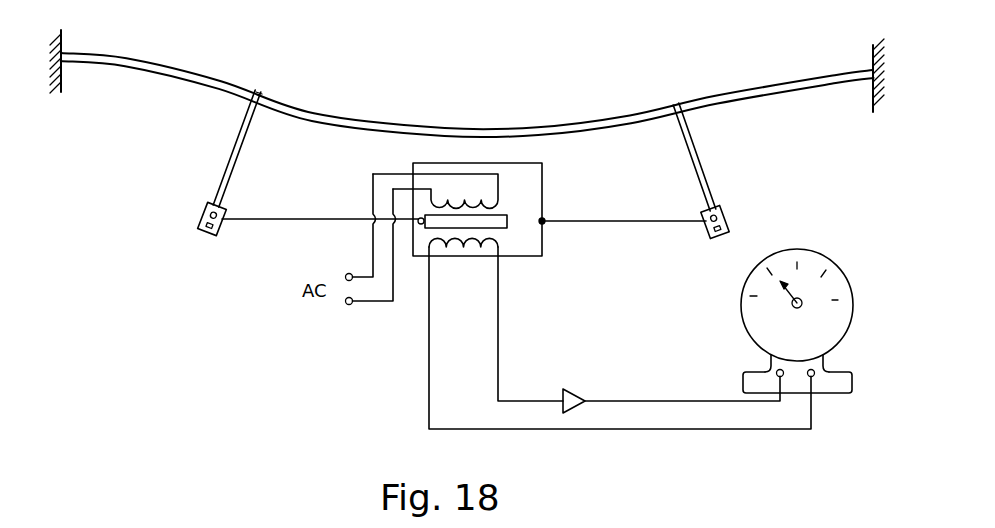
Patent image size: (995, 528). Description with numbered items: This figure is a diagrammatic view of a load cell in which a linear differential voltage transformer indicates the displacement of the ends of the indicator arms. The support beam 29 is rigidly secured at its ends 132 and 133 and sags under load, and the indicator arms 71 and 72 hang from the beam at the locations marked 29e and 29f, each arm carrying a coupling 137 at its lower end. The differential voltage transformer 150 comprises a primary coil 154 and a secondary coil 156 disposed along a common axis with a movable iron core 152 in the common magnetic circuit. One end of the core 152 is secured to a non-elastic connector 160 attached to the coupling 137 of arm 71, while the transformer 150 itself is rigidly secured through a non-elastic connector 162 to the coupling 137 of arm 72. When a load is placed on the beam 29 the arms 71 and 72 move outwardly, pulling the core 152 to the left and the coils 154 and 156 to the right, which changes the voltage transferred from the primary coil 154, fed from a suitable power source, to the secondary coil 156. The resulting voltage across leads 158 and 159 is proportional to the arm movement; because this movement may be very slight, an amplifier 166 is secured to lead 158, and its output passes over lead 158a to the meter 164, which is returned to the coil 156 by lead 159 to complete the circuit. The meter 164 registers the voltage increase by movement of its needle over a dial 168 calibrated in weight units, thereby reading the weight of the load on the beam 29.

The support beam 29 is at (474, 131).
The beam attachment point 29e is at (262, 94).
The beam attachment point 29f is at (671, 105).
The indicator arm 71 is at (241, 160).
The indicator arm 72 is at (699, 156).
The end 132 is at (61, 80).
The end 133 is at (873, 92).
The coupling 137 is at (200, 219).
The differential voltage transformer 150 is at (545, 192).
The movable iron core 152 is at (488, 221).
The primary coil 154 is at (490, 187).
The secondary coil 156 is at (490, 248).
The lead 158 is at (499, 297).
The lead 158a is at (655, 388).
The lead 159 is at (430, 293).
The non-elastic connector 160 is at (284, 219).
The non-elastic connector 162 is at (602, 222).
The meter 164 is at (752, 325).
The amplifier 166 is at (572, 392).
The indicating meter 168 is at (818, 264).